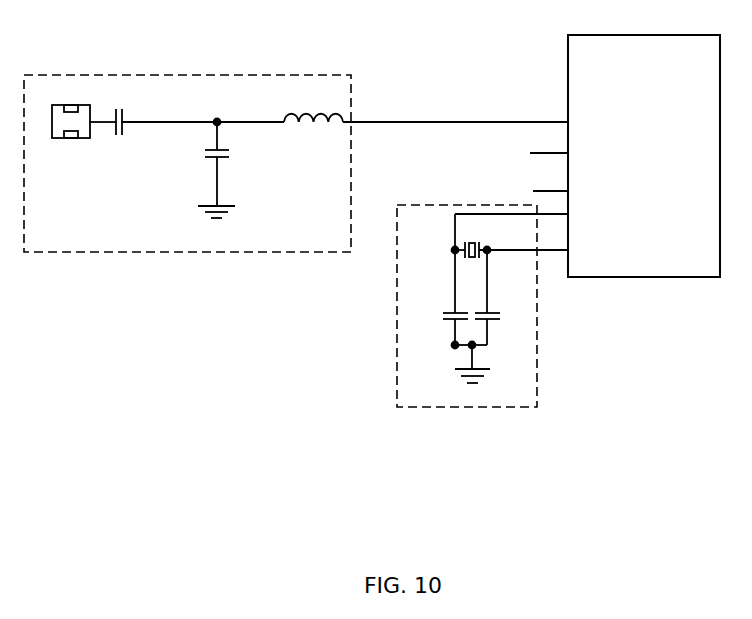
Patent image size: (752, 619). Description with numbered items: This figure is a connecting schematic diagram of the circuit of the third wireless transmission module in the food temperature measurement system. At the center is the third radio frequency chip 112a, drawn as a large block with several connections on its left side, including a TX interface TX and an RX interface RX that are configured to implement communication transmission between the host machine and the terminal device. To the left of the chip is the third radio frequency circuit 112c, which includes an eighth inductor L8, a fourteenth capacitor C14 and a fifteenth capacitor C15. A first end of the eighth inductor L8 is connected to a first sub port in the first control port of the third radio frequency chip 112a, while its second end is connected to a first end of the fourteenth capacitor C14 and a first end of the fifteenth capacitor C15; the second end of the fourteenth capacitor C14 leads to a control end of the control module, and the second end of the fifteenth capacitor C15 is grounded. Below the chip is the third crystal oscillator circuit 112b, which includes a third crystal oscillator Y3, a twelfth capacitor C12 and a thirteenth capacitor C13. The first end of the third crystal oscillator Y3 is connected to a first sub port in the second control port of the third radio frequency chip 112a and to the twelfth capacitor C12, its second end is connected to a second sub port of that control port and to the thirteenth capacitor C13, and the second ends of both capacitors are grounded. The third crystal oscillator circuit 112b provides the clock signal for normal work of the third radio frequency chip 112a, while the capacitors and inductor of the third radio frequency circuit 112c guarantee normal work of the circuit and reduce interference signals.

The third radio frequency chip 112a is at (644, 156).
The third crystal oscillator circuit 112b is at (538, 371).
The third radio frequency circuit 112c is at (343, 102).
The twelfth capacitor C12 is at (441, 316).
The thirteenth capacitor C13 is at (502, 316).
The fourteenth capacitor C14 is at (120, 133).
The fifteenth capacitor C15 is at (207, 170).
The eighth inductor L8 is at (313, 108).
The third crystal oscillator Y3 is at (511, 265).
The RX interface RX is at (536, 153).
The TX interface TX is at (537, 191).